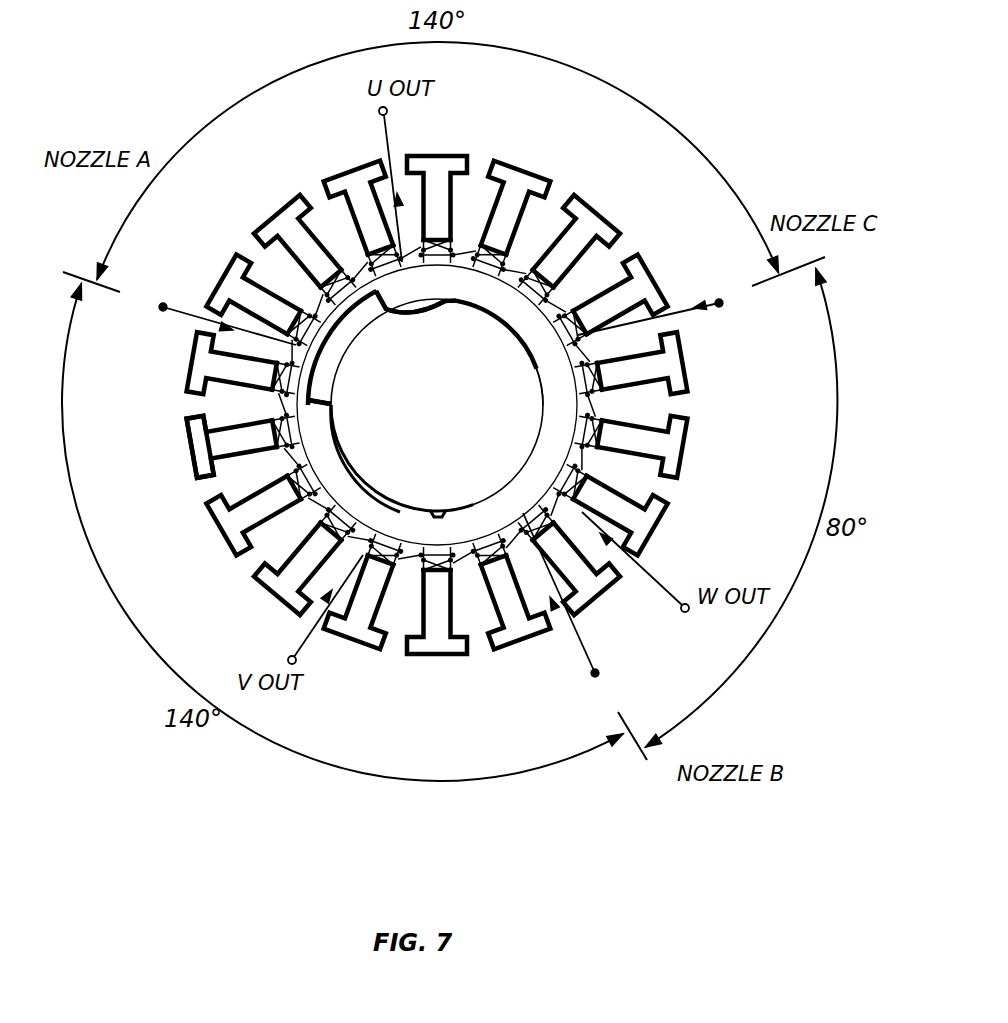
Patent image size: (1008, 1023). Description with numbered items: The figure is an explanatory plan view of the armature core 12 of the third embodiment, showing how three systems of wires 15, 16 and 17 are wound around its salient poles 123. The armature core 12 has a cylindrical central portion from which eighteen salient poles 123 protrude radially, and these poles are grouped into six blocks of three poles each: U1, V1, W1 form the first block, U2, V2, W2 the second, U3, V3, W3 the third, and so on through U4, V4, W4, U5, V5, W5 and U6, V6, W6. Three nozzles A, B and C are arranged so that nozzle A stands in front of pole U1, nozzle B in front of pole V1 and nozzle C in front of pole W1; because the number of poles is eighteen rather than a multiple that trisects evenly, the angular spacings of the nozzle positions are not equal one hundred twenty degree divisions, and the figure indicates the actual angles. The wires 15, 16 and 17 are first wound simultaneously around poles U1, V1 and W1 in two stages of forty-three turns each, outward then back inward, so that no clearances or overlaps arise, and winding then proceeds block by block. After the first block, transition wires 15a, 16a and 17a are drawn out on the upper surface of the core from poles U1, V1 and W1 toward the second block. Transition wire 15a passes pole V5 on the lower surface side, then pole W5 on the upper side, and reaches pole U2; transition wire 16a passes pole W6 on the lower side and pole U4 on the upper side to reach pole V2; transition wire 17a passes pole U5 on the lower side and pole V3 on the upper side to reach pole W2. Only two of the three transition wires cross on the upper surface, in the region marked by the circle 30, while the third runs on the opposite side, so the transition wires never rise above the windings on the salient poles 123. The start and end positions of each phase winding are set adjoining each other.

The armature core 12 is at (424, 475).
The wire 15 is at (160, 305).
The transition wire 15a is at (357, 493).
The wire 16 is at (598, 671).
The transition wire 16a is at (567, 412).
The wire 17 is at (712, 301).
The transition wire 17a is at (472, 263).
The circle 30 is at (327, 460).
The salient pole 123 is at (238, 467).
The salient pole W1 is at (648, 284).
The salient pole W2 is at (437, 160).
The salient pole W3 is at (232, 290).
The salient pole W4 is at (232, 528).
The salient pole W5 is at (438, 652).
The salient pole W6 is at (650, 522).
The salient pole U1 is at (205, 366).
The salient pole U2 is at (285, 594).
The salient pole U3 is at (521, 636).
The salient pole U4 is at (678, 446).
The salient pole U5 is at (594, 216).
The salient pole U6 is at (355, 175).
The salient pole V1 is at (595, 588).
The salient pole V2 is at (676, 362).
The salient pole V3 is at (520, 174).
The salient pole V4 is at (285, 220).
The salient pole V5 is at (205, 447).
The salient pole V6 is at (353, 637).